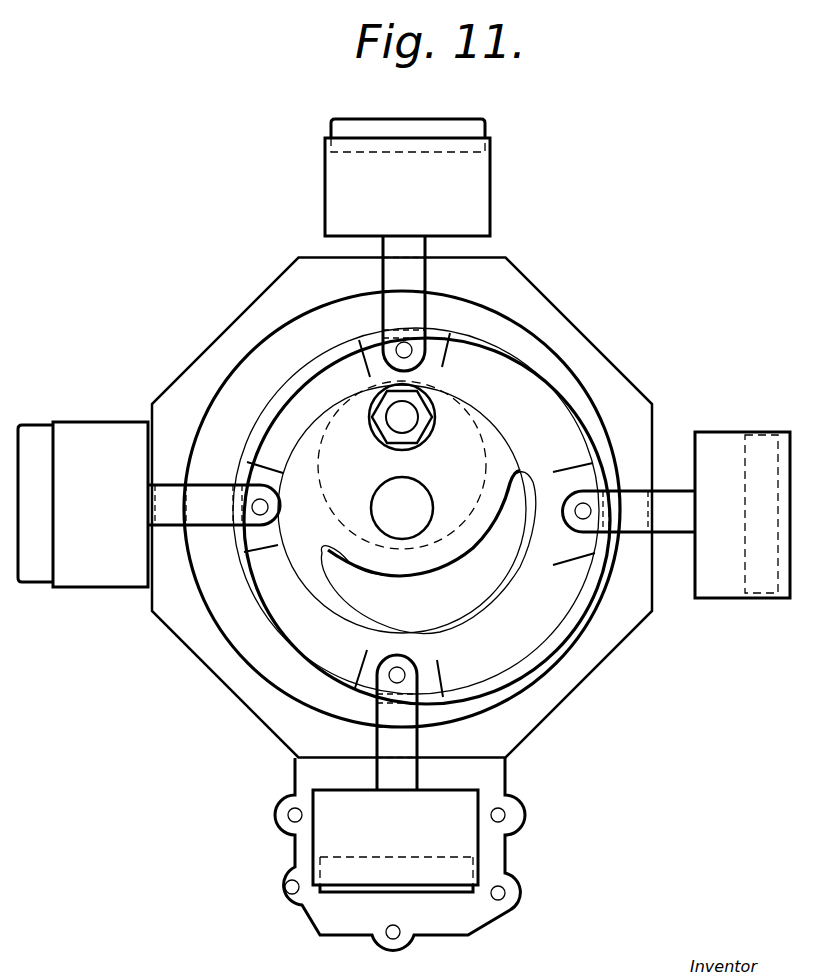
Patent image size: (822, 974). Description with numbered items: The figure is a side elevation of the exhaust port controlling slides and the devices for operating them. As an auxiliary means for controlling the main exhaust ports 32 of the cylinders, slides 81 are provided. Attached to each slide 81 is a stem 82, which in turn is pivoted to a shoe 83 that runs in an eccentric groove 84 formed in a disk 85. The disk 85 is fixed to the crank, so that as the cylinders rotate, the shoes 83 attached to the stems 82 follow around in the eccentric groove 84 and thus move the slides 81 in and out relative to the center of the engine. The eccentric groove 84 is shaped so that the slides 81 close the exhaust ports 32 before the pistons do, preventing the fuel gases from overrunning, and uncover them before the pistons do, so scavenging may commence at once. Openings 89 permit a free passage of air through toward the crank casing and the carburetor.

The exhaust ports 32 is at (485, 132).
The slides 81 is at (421, 511).
The stem 82 is at (426, 279).
The shoe 83 is at (432, 358).
The eccentric groove 84 is at (528, 372).
The disk 85 is at (590, 390).
The openings 89 is at (428, 552).